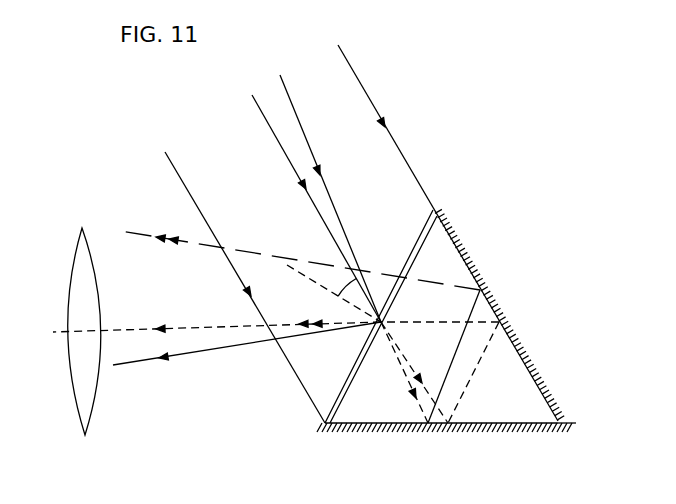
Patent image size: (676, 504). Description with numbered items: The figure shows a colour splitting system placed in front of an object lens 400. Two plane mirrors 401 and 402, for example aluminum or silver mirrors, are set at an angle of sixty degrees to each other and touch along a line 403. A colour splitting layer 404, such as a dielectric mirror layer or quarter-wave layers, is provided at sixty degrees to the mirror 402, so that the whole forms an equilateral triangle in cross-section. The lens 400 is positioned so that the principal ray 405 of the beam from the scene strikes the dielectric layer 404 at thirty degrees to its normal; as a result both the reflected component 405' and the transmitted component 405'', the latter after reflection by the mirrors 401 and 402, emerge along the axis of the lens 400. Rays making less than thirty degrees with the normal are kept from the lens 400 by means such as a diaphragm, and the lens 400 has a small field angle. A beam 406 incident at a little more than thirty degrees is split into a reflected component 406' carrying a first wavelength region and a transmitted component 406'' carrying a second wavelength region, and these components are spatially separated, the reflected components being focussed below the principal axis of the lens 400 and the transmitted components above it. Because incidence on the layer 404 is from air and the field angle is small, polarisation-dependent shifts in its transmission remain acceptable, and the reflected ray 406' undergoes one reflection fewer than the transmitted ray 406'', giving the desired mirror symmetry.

The object lens 400 is at (78, 390).
The plane mirror 401 is at (537, 375).
The plane mirror 402 is at (522, 423).
The line 403 is at (563, 420).
The colour splitting layer 404 is at (422, 232).
The principal ray 405 is at (316, 208).
The beam 406 is at (330, 198).
The reflected component 405' is at (217, 313).
The reflected component 406' is at (247, 358).
The transmitted component 405'' is at (393, 344).
The transmitted component 406'' is at (297, 287).